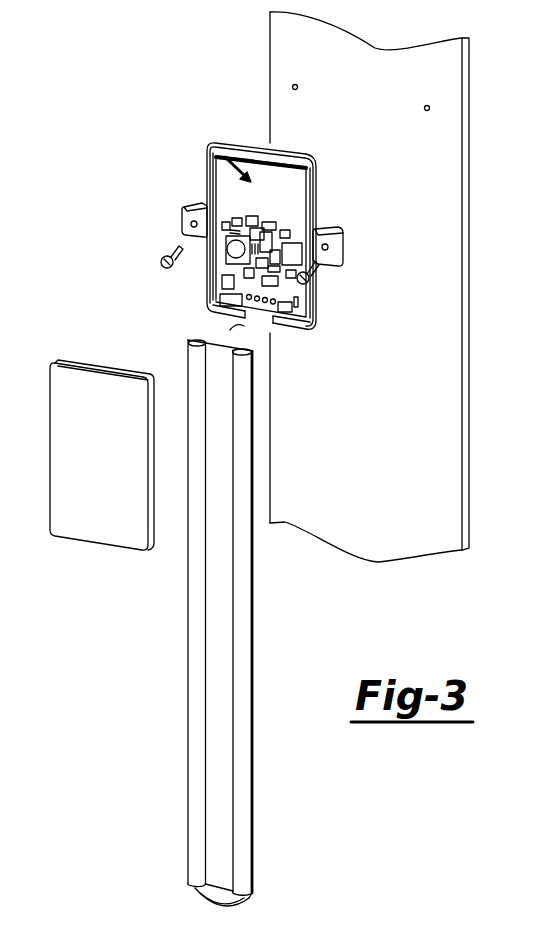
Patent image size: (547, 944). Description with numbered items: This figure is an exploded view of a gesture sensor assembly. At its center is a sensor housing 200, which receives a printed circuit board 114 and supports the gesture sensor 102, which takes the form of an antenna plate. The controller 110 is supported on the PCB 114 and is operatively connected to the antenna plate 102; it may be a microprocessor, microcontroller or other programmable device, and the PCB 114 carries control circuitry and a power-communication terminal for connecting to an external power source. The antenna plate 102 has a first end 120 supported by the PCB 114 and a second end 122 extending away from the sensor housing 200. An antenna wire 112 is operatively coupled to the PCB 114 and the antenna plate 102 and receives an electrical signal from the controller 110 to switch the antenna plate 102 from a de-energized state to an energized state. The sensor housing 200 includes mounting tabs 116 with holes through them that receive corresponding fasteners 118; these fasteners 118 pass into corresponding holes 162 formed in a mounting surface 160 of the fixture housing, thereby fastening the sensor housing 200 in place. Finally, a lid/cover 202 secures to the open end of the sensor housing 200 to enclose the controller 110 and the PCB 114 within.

The gesture sensor 102 is at (198, 792).
The controller 110 is at (231, 288).
The antenna wire 112 is at (205, 903).
The printed circuit board 114 is at (207, 150).
The mounting tab 116 is at (185, 223).
The fastener 118 is at (160, 265).
The first end 120 is at (225, 343).
The second end 122 is at (253, 910).
The mounting surface 160 is at (405, 438).
The hole 162 is at (427, 110).
The sensor housing 200 is at (194, 197).
The lid/cover 202 is at (113, 528).